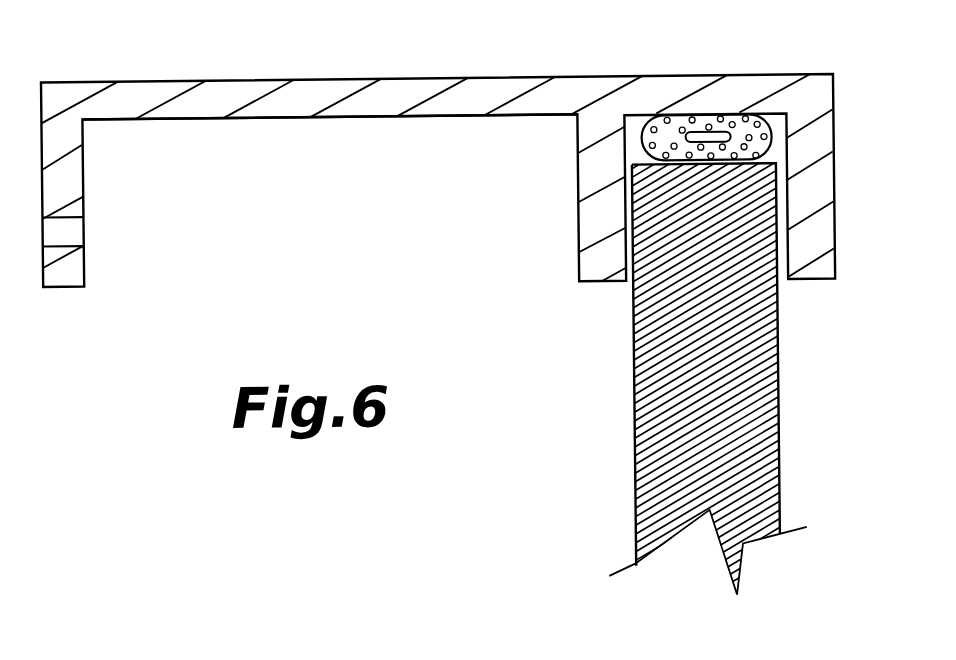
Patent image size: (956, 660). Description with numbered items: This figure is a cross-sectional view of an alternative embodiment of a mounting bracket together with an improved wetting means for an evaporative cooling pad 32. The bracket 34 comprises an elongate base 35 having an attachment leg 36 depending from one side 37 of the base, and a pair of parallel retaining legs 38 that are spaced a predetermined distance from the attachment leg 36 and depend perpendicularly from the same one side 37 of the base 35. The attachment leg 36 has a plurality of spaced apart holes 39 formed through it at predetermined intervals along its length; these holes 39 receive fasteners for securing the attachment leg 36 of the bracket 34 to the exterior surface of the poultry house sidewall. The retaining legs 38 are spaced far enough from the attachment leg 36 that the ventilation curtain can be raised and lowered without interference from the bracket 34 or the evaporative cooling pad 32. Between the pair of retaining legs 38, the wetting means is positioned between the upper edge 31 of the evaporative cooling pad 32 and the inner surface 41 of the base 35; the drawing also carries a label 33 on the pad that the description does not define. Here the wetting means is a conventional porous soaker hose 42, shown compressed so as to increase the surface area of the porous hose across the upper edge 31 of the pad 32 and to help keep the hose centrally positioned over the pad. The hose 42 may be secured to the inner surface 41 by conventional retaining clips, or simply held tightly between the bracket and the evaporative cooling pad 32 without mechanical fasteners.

The upper edge 31 is at (691, 361).
The evaporative cooling pad 32 is at (743, 425).
The rod upper portion 33 is at (758, 232).
The bracket 34 is at (327, 73).
The elongate base 35 is at (207, 99).
The attachment leg 36 is at (77, 172).
The one side 37 is at (254, 123).
The retaining legs 38 is at (597, 181).
The holes 39 is at (77, 236).
The inner surface 41 is at (749, 99).
The soaker hose 42 is at (730, 118).